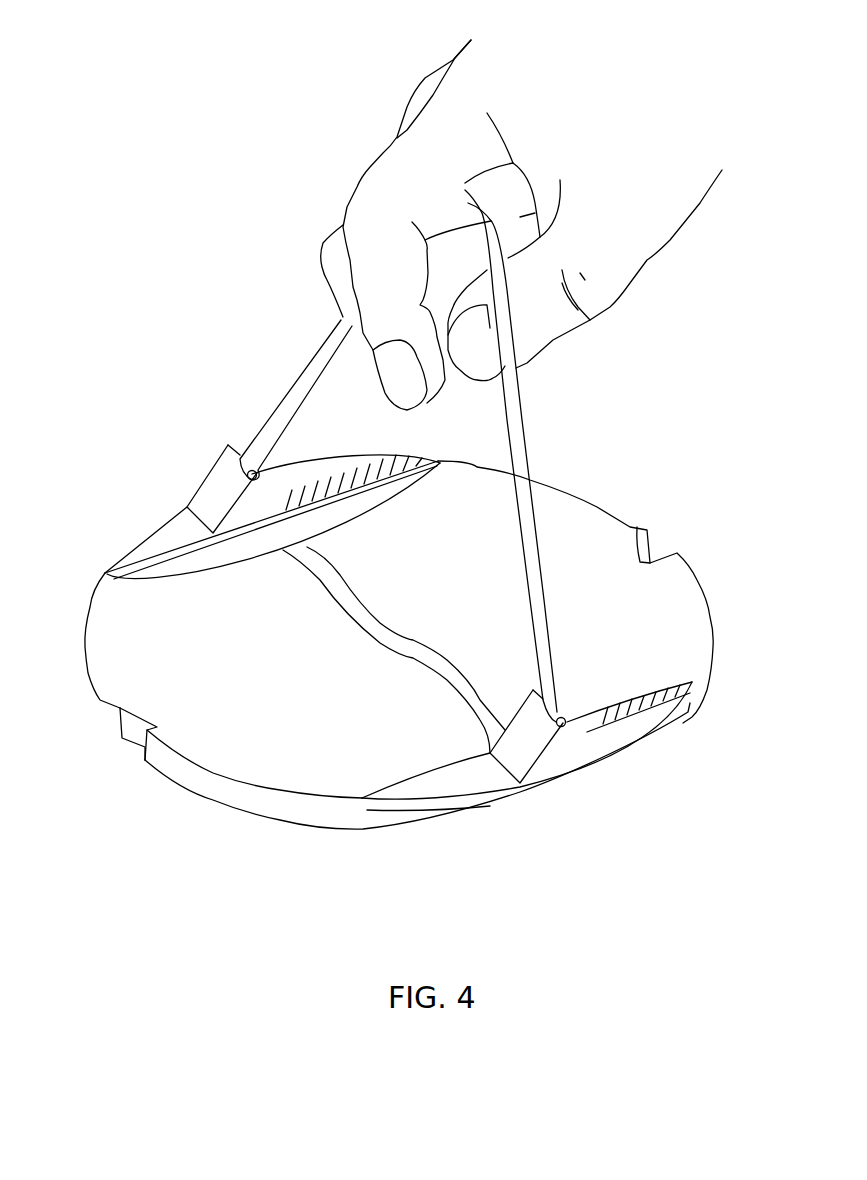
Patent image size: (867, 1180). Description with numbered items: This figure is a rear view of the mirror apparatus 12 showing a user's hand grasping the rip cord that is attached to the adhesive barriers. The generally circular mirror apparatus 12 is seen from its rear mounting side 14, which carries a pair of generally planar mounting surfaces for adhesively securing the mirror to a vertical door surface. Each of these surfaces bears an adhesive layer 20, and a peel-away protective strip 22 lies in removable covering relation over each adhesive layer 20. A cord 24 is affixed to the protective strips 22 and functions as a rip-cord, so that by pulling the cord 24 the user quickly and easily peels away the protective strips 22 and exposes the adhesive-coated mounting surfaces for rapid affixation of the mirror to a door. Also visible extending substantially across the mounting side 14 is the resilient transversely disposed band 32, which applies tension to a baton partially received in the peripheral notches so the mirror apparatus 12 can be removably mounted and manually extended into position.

The mirror apparatus 12 is at (399, 629).
The rear mounting side 14 is at (665, 457).
The adhesive layer 20 is at (152, 548).
The peel-away protective strip 22 is at (213, 470).
The cord 24 is at (298, 378).
The resilient transversely disposed band 32 is at (385, 640).